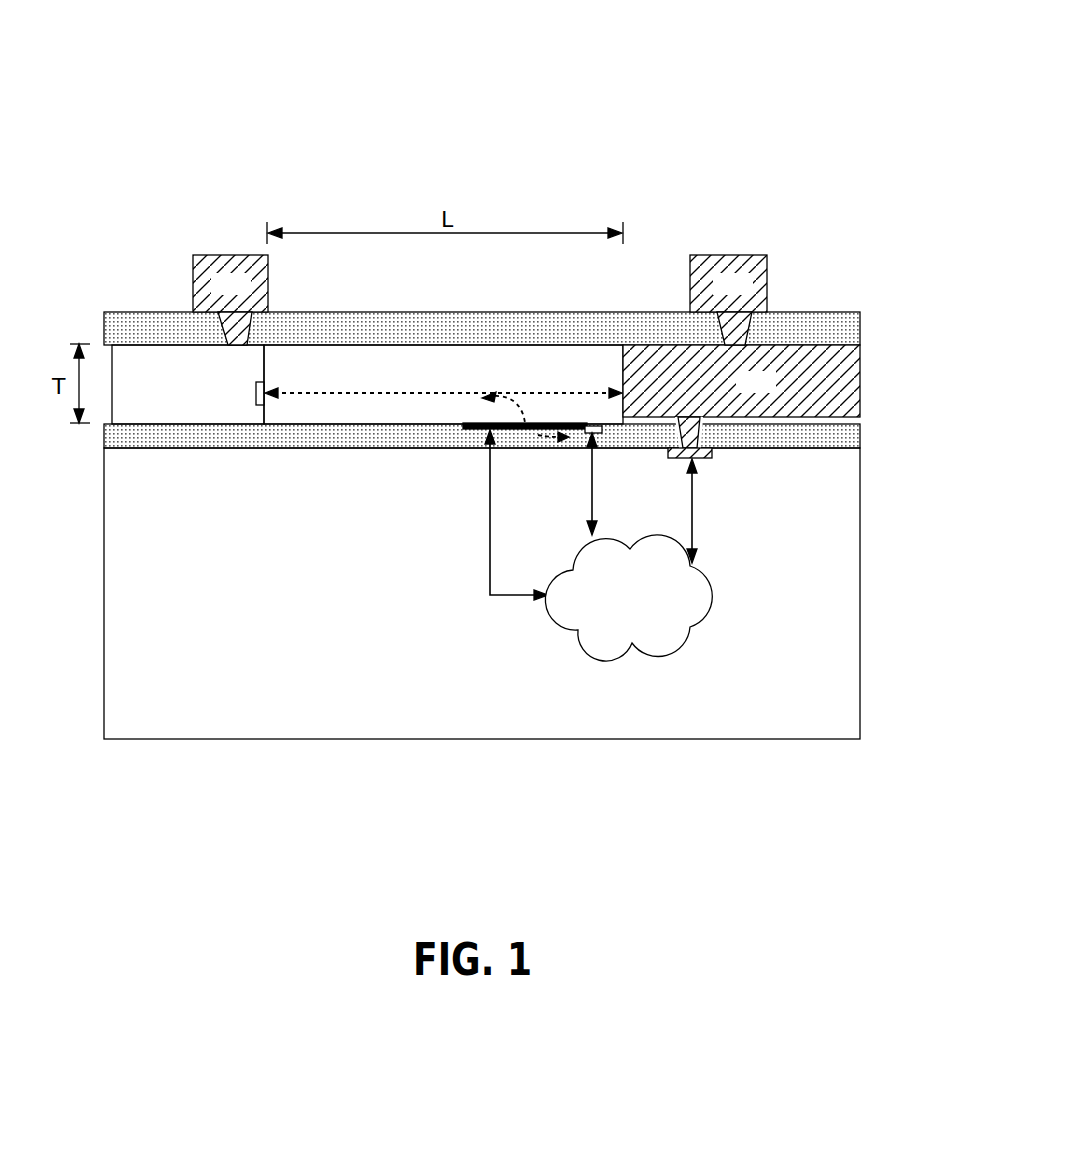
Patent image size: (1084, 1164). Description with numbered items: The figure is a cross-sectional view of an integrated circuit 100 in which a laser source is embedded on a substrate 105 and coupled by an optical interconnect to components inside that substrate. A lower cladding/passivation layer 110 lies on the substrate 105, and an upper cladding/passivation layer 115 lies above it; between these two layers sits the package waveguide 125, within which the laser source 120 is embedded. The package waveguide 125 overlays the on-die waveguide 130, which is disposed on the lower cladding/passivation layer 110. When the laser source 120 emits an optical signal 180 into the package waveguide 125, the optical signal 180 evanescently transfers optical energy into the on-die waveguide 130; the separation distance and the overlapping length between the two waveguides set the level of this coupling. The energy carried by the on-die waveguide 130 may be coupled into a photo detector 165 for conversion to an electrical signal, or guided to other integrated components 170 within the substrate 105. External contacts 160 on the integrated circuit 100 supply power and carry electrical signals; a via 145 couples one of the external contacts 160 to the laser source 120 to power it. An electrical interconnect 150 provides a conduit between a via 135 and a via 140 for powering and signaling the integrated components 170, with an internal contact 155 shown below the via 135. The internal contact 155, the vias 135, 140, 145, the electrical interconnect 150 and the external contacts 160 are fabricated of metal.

The integrated circuit 100 is at (775, 104).
The substrate 105 is at (331, 716).
The lower cladding/passivation layer 110 is at (860, 435).
The upper cladding/passivation layer 115 is at (860, 321).
The laser source 120 is at (200, 396).
The package waveguide 125 is at (342, 377).
The on-die waveguide 130 is at (468, 432).
The via 135 is at (705, 438).
The via 140 is at (722, 322).
The via 145 is at (253, 323).
The electrical interconnect 150 is at (772, 392).
The internal contact 155 is at (712, 458).
The external contacts 160 is at (247, 294).
The photo detector 165 is at (600, 431).
The integrated components 170 is at (688, 632).
The optical signal 180 is at (376, 393).